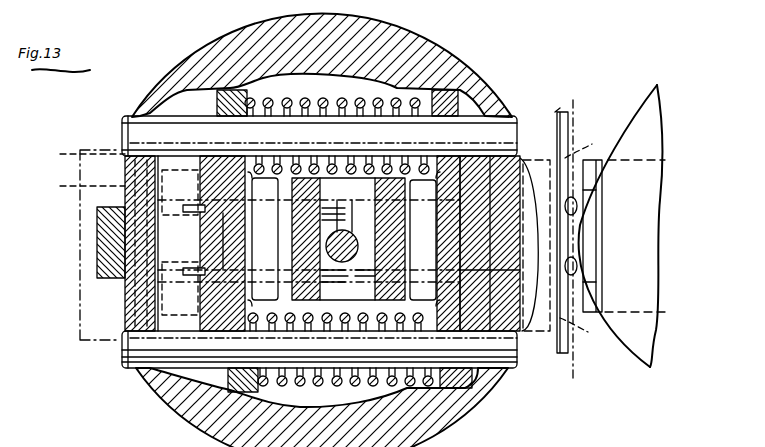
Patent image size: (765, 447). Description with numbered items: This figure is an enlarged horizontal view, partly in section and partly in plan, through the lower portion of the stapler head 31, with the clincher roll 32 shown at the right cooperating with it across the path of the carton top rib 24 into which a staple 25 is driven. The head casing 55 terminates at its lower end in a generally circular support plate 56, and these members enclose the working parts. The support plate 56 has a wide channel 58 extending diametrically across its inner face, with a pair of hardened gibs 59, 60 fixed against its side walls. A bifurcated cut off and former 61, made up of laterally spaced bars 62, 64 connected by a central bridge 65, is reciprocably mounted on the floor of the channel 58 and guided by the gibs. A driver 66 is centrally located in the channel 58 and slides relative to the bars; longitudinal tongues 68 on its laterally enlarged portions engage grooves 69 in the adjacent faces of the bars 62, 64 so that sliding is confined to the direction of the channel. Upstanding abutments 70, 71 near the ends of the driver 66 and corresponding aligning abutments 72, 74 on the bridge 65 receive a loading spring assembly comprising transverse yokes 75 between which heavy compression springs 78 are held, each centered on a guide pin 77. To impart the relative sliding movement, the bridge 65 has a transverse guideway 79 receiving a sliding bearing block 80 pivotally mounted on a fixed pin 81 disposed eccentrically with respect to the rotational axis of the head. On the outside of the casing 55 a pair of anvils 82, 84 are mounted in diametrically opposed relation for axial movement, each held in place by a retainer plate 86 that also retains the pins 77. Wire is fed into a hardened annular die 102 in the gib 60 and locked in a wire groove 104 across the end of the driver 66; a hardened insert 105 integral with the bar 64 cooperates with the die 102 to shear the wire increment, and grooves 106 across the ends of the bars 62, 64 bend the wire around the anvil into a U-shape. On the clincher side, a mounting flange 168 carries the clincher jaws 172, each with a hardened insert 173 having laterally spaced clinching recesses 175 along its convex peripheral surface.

The top rib 24 is at (582, 132).
The staple 25 is at (598, 259).
The stapler head 31 is at (476, 59).
The clincher roll 32 is at (631, 357).
The head casing 55 is at (413, 40).
The support plate 56 is at (168, 398).
The channel 58 is at (160, 118).
The gib 59 is at (152, 375).
The gib 60 is at (220, 120).
The cut off and former 61 is at (262, 256).
The bar 62 is at (514, 345).
The bar 64 is at (553, 118).
The bridge 65 is at (273, 235).
The driver 66 is at (186, 249).
The tongue 68 is at (250, 172).
The groove 69 is at (179, 242).
The abutment 70 is at (436, 250).
The abutment 71 is at (200, 258).
The aligning abutment 72 is at (440, 178).
The aligning abutment 74 is at (208, 192).
The yoke 75 is at (452, 395).
The guide pin 77 is at (514, 128).
The compression spring 78 is at (290, 100).
The transverse guideway 79 is at (322, 297).
The bearing block 80 is at (354, 214).
The fixed pin 81 is at (336, 214).
The anvil 82 is at (600, 244).
The anvil 84 is at (104, 261).
The retainer plate 86 is at (78, 328).
The annular die 102 is at (512, 395).
The wire groove 104 is at (200, 226).
The hardened insert 105 is at (532, 332).
The groove 106 is at (322, 232).
The mounting flange 168 is at (656, 336).
The clincher jaw 172 is at (599, 353).
The hardened insert 173 is at (598, 234).
The clinching recess 175 is at (592, 203).